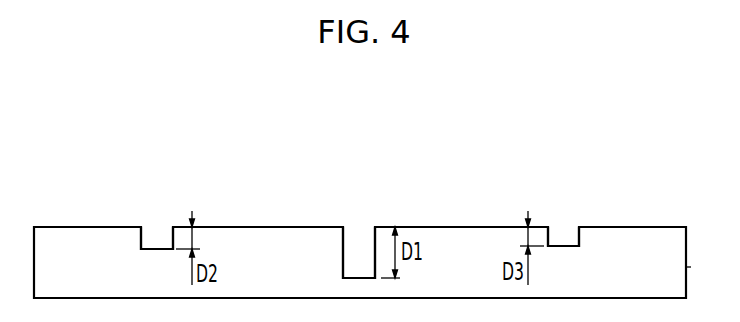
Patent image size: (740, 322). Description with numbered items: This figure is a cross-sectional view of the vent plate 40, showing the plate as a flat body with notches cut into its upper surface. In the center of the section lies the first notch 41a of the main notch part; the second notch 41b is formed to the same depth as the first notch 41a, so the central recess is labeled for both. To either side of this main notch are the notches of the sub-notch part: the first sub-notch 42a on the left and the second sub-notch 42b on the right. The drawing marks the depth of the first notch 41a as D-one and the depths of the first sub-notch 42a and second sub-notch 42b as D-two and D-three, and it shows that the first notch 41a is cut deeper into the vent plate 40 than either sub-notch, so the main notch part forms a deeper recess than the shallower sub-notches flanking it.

The vent plate 40 is at (374, 136).
The first sub-notch 42a is at (156, 238).
The second sub-notch 42b is at (563, 237).
The first notch 41a is at (360, 250).
The second notch 41b is at (383, 229).